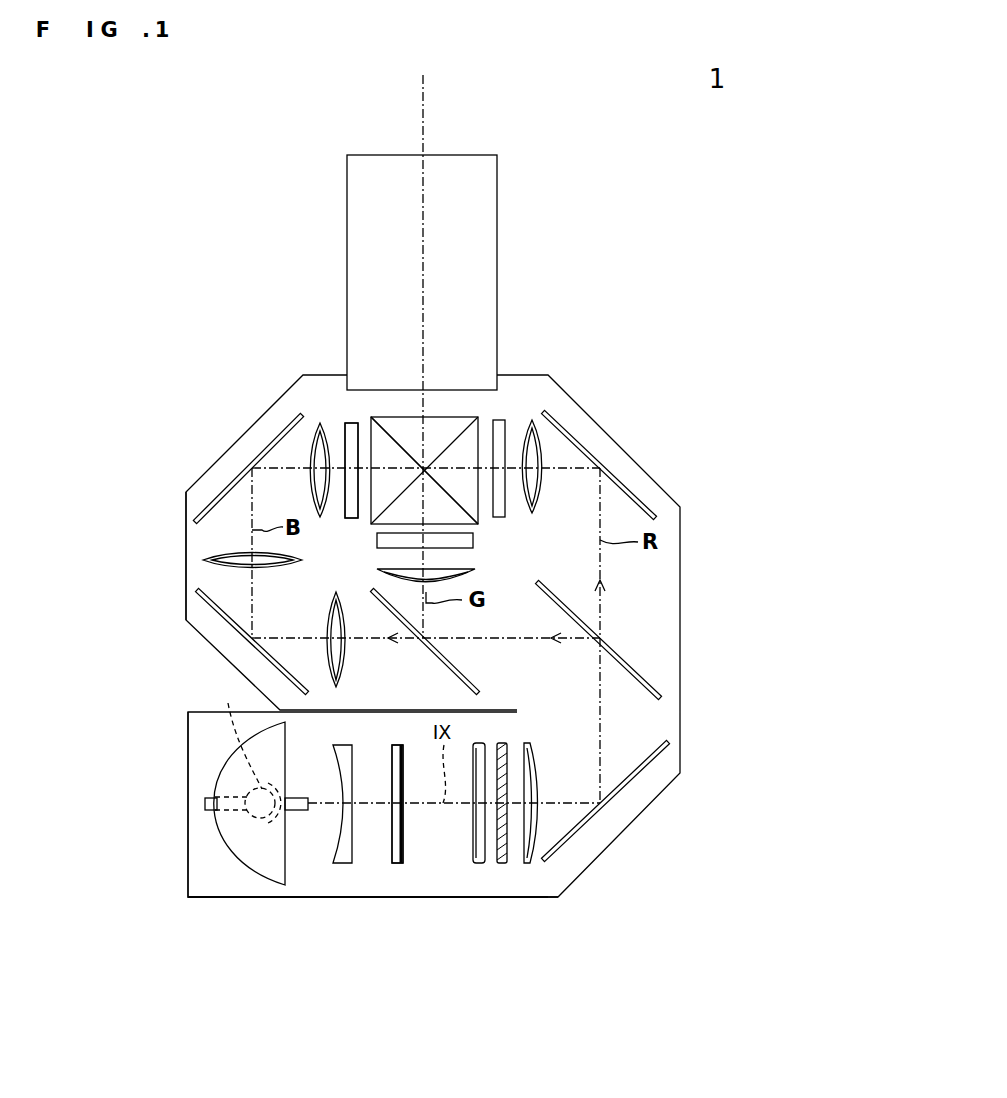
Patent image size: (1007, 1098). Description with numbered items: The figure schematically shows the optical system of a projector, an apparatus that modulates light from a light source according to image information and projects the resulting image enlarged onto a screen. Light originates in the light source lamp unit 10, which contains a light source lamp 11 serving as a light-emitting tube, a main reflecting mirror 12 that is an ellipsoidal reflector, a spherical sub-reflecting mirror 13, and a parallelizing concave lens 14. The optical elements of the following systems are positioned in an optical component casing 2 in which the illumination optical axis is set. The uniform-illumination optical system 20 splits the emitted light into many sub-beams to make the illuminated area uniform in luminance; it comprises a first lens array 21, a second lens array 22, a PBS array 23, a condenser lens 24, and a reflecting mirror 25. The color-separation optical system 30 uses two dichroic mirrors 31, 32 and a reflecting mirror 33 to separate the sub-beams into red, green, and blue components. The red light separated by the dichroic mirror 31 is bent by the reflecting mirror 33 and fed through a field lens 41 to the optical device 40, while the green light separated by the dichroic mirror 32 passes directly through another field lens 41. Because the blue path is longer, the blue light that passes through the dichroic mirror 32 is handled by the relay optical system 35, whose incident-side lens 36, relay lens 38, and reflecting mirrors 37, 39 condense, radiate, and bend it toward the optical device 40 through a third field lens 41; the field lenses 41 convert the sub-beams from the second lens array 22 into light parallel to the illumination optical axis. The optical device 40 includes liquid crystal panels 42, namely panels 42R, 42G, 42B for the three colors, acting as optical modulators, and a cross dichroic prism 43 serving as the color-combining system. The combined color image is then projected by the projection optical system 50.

The optical component casing 2 is at (267, 900).
The light source lamp unit 10 is at (196, 771).
The light source lamp 11 is at (245, 815).
The main reflecting mirror 12 is at (247, 873).
The sub-reflecting mirror 13 is at (234, 734).
The parallelizing concave lens 14 is at (343, 863).
The uniform-illumination optical system 20 is at (428, 918).
The first lens array 21 is at (395, 863).
The second lens array 22 is at (480, 863).
The PBS array 23 is at (502, 863).
The condenser lens 24 is at (527, 863).
The reflecting mirror 25 is at (590, 818).
The color-separation optical system 30 is at (656, 587).
The dichroic mirror 31 is at (643, 677).
The dichroic mirror 32 is at (480, 690).
The reflecting mirror 33 is at (643, 500).
The relay optical system 35 is at (166, 591).
The incident-side lens 36 is at (340, 670).
The reflecting mirror 37 is at (227, 625).
The relay lens 38 is at (203, 558).
The reflecting mirror 39 is at (233, 483).
The optical device 40 is at (471, 399).
The field lens 41 is at (312, 462).
The liquid crystal panel 42 is at (331, 398).
The liquid crystal panel 42B is at (344, 422).
The liquid crystal panel 42G is at (475, 540).
The liquid crystal panel 42R is at (500, 420).
The cross dichroic prism 43 is at (387, 417).
The projection optical system 50 is at (477, 237).